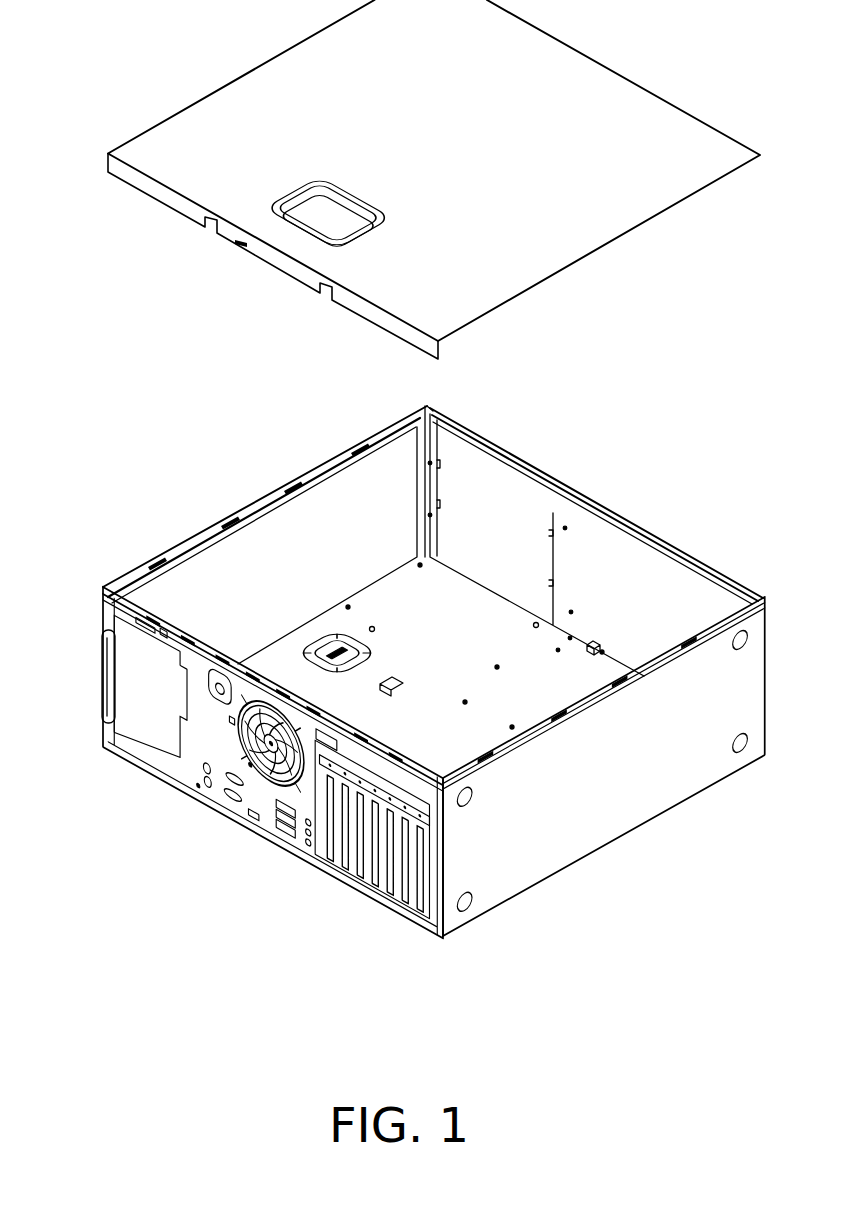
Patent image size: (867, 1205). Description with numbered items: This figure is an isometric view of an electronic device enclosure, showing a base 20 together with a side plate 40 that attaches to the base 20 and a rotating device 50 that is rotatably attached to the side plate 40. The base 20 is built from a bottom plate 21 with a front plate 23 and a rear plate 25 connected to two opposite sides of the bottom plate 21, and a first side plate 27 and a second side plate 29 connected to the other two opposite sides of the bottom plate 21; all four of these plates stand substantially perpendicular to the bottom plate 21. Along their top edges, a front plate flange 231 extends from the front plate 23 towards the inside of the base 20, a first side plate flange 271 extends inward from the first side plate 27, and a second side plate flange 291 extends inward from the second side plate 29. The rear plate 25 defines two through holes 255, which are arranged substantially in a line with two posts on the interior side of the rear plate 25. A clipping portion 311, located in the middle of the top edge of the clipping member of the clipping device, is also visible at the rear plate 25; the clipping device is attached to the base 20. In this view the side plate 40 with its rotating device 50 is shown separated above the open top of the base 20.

The base 20 is at (419, 715).
The bottom plate 21 is at (478, 623).
The front plate 23 is at (595, 538).
The front plate flange 231 is at (482, 440).
The rear plate 25 is at (378, 853).
The through holes 255 is at (208, 662).
The first side plate 27 is at (604, 810).
The first side plate flange 271 is at (640, 660).
The second side plate 29 is at (250, 535).
The second side plate flange 291 is at (155, 560).
The clipping portion 311 is at (275, 690).
The side plate 40 is at (434, 179).
The rotating device 50 is at (312, 213).